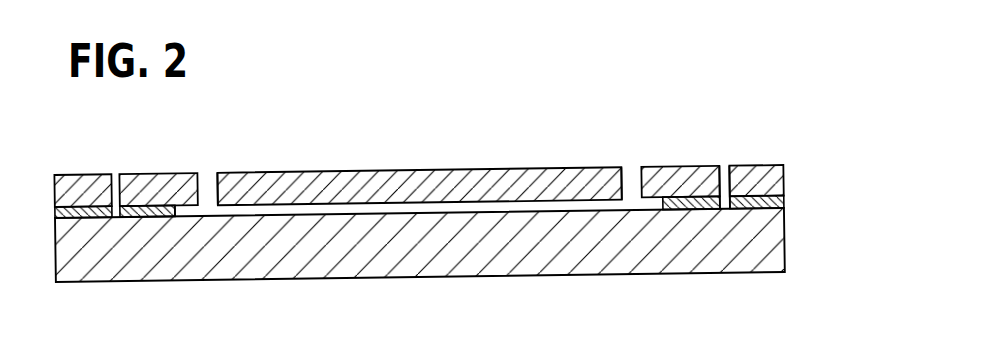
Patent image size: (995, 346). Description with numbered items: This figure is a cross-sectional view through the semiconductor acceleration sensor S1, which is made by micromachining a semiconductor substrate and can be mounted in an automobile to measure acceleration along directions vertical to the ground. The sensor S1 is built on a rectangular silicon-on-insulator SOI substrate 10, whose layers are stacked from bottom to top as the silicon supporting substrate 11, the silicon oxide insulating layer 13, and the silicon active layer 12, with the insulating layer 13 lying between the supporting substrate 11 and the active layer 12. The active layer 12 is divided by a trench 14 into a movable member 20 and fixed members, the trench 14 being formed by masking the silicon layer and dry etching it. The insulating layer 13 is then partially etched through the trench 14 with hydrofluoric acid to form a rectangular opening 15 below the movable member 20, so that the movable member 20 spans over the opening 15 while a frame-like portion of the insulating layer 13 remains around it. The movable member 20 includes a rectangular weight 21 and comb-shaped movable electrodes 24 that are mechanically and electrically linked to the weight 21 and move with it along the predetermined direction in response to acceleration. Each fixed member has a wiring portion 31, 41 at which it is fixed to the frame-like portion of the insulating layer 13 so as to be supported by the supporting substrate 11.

The semiconductor acceleration sensor S1 is at (783, 144).
The SOI substrate 10 is at (847, 168).
The silicon supporting substrate 11 is at (777, 226).
The silicon active layer 12 is at (777, 182).
The silicon oxide insulating layer 13 is at (777, 203).
The trench 14 is at (722, 165).
The opening 15 is at (179, 217).
The movable member 20 is at (491, 166).
The weight 21 is at (437, 169).
The movable electrode 24 is at (225, 174).
The wiring portion 31 is at (136, 174).
The wiring portion 41 is at (690, 165).